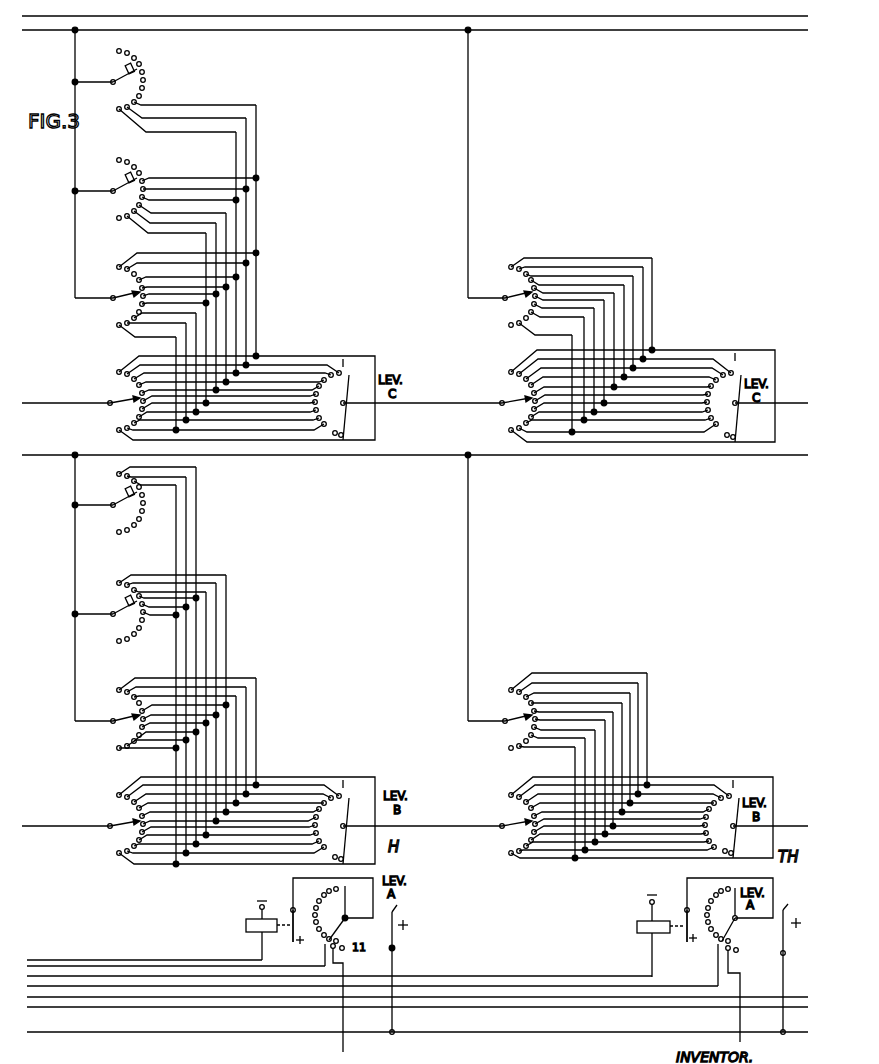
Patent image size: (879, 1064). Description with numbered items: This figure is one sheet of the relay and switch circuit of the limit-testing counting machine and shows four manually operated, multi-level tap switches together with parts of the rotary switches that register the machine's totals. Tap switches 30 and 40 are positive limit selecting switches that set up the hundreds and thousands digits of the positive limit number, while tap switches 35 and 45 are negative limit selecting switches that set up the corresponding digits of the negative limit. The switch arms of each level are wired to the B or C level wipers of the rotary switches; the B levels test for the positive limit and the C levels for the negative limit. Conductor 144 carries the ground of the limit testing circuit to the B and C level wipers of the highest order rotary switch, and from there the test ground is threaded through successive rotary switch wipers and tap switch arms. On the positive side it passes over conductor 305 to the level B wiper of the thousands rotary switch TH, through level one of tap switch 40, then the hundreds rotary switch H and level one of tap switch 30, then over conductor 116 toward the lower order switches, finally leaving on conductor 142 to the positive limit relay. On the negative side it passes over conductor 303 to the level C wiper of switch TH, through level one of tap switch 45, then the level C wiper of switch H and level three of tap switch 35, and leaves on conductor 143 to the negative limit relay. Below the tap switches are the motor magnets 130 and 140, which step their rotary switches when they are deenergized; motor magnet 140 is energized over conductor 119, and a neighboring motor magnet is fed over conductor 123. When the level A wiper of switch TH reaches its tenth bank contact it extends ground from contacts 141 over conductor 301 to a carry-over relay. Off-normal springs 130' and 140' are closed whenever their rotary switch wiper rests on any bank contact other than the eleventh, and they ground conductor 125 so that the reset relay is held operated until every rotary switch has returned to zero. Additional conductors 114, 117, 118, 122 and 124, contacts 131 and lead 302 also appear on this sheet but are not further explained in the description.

The conductor 144 is at (56, 16).
The conductor 143 is at (56, 30).
The conductor 142 is at (60, 455).
The input lead 114 is at (66, 396).
The conductor 116 is at (66, 819).
The conductor 303 is at (771, 393).
The conductor 305 is at (770, 836).
The negative limit selecting switch 35 is at (223, 243).
The negative limit selecting switch 45 is at (621, 343).
The positive limit selecting switch 30 is at (223, 666).
The positive limit selecting switch 40 is at (620, 759).
The conductor 117 is at (52, 960).
The conductor 118 is at (82, 966).
The conductor 119 is at (112, 976).
The conductor 122 is at (63, 987).
The conductor 123 is at (168, 997).
The conductor 124 is at (115, 1007).
The conductor 125 is at (66, 1032).
The motor magnet 130 is at (248, 930).
The relay contact 131 is at (293, 945).
The lead 302 is at (343, 1018).
The off-normal spring contacts 130' is at (416, 969).
The motor magnet 140 is at (637, 936).
The contacts 141 is at (693, 947).
The conductor 301 is at (740, 1018).
The off-normal spring contacts 140' is at (799, 969).